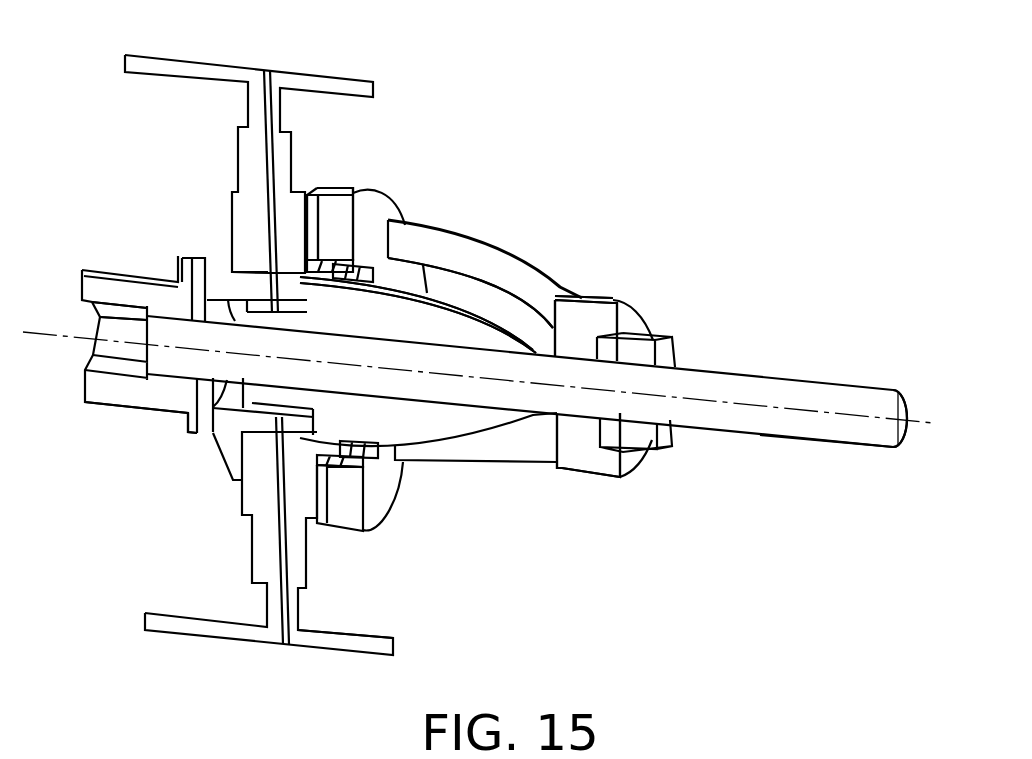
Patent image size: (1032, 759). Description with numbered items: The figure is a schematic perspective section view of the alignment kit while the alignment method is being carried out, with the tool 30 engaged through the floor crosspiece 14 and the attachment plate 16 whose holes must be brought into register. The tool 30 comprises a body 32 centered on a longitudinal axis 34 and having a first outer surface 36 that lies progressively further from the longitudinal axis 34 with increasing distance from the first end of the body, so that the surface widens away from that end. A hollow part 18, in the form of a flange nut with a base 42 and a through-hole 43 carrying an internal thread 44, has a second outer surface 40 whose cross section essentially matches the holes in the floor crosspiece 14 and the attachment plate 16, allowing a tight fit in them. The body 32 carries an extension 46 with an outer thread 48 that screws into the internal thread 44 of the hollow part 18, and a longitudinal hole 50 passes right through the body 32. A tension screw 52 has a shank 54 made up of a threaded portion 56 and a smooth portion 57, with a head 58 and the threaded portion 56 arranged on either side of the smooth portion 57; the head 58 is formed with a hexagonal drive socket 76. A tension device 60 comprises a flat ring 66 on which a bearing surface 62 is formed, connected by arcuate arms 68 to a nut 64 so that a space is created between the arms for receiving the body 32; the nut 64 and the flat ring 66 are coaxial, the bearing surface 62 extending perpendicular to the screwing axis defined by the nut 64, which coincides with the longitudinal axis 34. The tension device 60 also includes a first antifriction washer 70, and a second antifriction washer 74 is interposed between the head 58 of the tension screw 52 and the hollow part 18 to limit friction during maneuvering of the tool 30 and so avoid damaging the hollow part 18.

The floor crosspiece 14 is at (250, 550).
The attachment plate 16 is at (309, 573).
The hollow part 18 is at (211, 241).
The tool 30 is at (99, 425).
The body 32 is at (473, 330).
The longitudinal axis 34 is at (915, 427).
The first outer surface 36 is at (445, 412).
The second outer surface 40 is at (263, 435).
The base 42 is at (231, 232).
The through-hole 43 is at (337, 308).
The internal thread 44 is at (337, 308).
The extension 46 is at (273, 393).
The outer thread 48 is at (263, 300).
The longitudinal hole 50 is at (406, 395).
The tension screw 52 is at (124, 272).
The shank 54 is at (817, 432).
The threaded portion 56 is at (860, 387).
The smooth portion 57 is at (428, 400).
The head 58 is at (185, 418).
The tension device 60 is at (580, 233).
The bearing surface 62 is at (312, 236).
The nut 64 is at (642, 435).
The flat ring 66 is at (380, 197).
The arcuate arms 68 is at (515, 272).
The first antifriction washer 70 is at (320, 188).
The second antifriction washer 74 is at (205, 435).
The hexagonal drive socket 76 is at (107, 329).